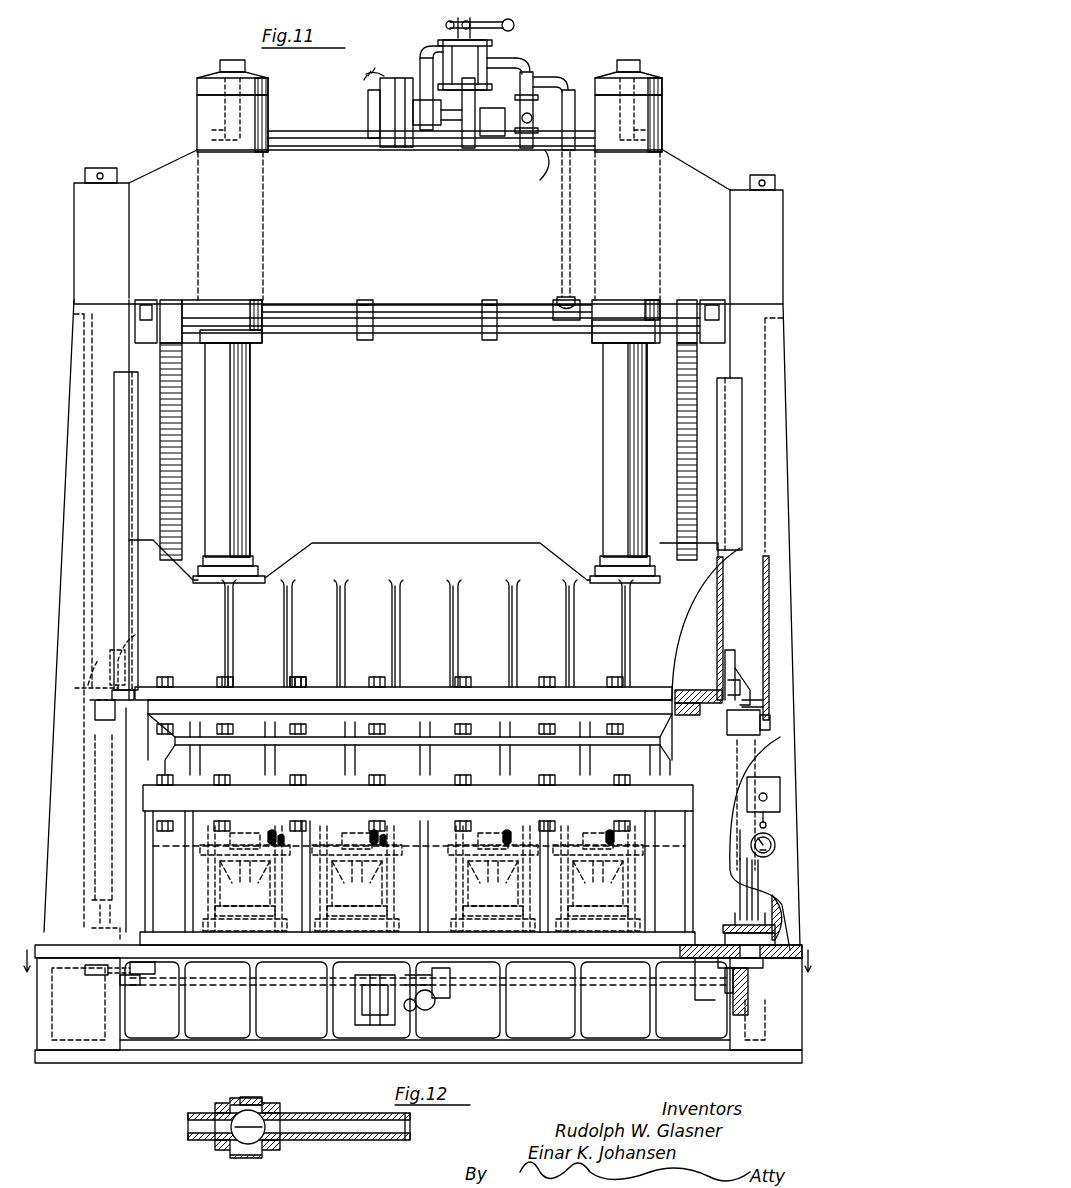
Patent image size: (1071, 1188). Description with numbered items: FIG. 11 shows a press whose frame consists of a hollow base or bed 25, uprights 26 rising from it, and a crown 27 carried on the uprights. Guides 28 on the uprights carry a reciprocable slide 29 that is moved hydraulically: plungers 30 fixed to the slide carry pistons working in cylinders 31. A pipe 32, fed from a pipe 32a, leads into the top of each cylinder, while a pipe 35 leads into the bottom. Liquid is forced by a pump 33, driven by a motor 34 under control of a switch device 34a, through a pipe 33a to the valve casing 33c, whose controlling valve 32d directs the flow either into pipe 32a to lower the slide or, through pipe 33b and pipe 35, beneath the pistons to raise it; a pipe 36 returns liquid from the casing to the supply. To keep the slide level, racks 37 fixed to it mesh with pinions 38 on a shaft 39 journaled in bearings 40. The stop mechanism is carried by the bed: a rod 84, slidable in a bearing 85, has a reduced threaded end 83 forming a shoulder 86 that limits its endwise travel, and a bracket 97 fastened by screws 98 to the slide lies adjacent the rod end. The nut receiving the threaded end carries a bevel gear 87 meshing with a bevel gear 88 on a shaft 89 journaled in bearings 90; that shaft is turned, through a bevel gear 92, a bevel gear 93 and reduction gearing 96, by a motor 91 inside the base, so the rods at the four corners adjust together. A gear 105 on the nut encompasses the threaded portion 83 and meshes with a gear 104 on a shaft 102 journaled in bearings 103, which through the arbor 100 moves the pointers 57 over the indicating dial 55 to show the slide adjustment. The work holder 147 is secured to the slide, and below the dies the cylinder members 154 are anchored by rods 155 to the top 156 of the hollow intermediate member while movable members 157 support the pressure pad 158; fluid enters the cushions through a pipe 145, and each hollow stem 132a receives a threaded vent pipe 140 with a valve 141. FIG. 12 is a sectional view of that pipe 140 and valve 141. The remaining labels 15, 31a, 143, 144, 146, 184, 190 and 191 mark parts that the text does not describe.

In FIG. 11, the section line 15 is at (417, 948).
In FIG. 11, the base or bed 25 is at (150, 1045).
In FIG. 11, the uprights 26 is at (72, 482).
In FIG. 11, the crown 27 is at (72, 265).
In FIG. 11, the guides 28 is at (120, 372).
In FIG. 11, the slide 29 is at (474, 548).
In FIG. 11, the plungers 30 is at (252, 425).
In FIG. 11, the cylinder 31 is at (268, 110).
In FIG. 11, the tank connection 31a is at (534, 175).
In FIG. 11, the pipe 32 is at (325, 128).
In FIG. 11, the pipe 32a is at (420, 58).
In FIG. 11, the controlling valve 32d is at (514, 22).
In FIG. 11, the pump 33 is at (526, 150).
In FIG. 11, the pipe 33a is at (508, 70).
In FIG. 11, the pipe 33b is at (578, 100).
In FIG. 11, the valve casing 33c is at (448, 50).
In FIG. 11, the motor 34 is at (372, 98).
In FIG. 11, the switch device 34a is at (770, 776).
In FIG. 11, the pipe 35 is at (453, 306).
In FIG. 11, the pipe 36 is at (468, 150).
In FIG. 11, the racks 37 is at (178, 462).
In FIG. 11, the pinions 38 is at (195, 312).
In FIG. 11, the shaft 39 is at (448, 334).
In FIG. 11, the bearings 40 is at (147, 316).
In FIG. 11, the indicating dial 55 is at (768, 840).
In FIG. 11, the pointers or fingers 57 is at (750, 848).
In FIG. 11, the reduced threaded end 83 is at (95, 1017).
In FIG. 11, the bar or rod 84 is at (760, 712).
In FIG. 11, the bearing 85 is at (116, 728).
In FIG. 11, the shoulder 86 is at (105, 905).
In FIG. 11, the bevel gear 87 is at (85, 970).
In FIG. 11, the bevel gear 88 is at (132, 986).
In FIG. 11, the shaft 89 is at (120, 705).
In FIG. 11, the bearings 90 is at (462, 960).
In FIG. 11, the motor 91 is at (355, 1005).
In FIG. 11, the bevel gear 92 is at (445, 982).
In FIG. 11, the bevel gear 93 is at (428, 1010).
In FIG. 11, the connecting or reduction gearing 96 is at (435, 1014).
In FIG. 11, the bracket 97 is at (75, 690).
In FIG. 11, the bolts or screws 98 is at (125, 668).
In FIG. 11, the arbor or shaft 100 is at (750, 840).
In FIG. 11, the shaft 102 is at (760, 902).
In FIG. 11, the bearings 103 is at (122, 932).
In FIG. 11, the gear 104 is at (785, 912).
In FIG. 11, the gear 105 is at (732, 925).
In FIG. 11, the hollow stem 132a is at (421, 878).
In FIG. 12, the pipe 140 is at (340, 1135).
In FIG. 12, the valve 141 is at (278, 1106).
In FIG. 12, the ball 143 is at (247, 1143).
In FIG. 12, the nut 144 is at (248, 1098).
In FIG. 11, the pipe 145 is at (195, 858).
In FIG. 11, the plate 146 is at (401, 944).
In FIG. 11, the work holder 147 is at (518, 712).
In FIG. 11, the cylinder members 154 is at (417, 943).
In FIG. 11, the rods 155 is at (425, 876).
In FIG. 11, the top of intermediate member 156 is at (205, 805).
In FIG. 11, the movable member 157 is at (357, 878).
In FIG. 11, the pressure pad or plate 158 is at (440, 822).
In FIG. 11, the bolt 184 is at (455, 686).
In FIG. 11, the clamp 190 is at (272, 832).
In FIG. 11, the clamp 191 is at (382, 838).